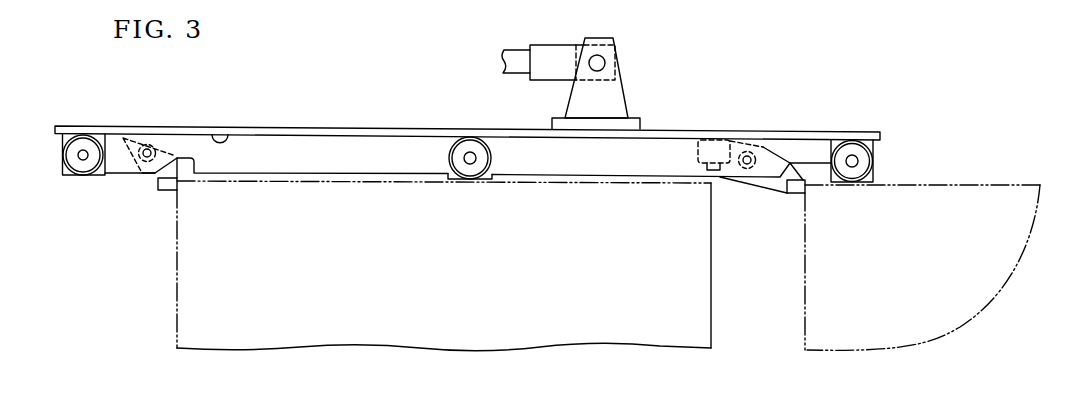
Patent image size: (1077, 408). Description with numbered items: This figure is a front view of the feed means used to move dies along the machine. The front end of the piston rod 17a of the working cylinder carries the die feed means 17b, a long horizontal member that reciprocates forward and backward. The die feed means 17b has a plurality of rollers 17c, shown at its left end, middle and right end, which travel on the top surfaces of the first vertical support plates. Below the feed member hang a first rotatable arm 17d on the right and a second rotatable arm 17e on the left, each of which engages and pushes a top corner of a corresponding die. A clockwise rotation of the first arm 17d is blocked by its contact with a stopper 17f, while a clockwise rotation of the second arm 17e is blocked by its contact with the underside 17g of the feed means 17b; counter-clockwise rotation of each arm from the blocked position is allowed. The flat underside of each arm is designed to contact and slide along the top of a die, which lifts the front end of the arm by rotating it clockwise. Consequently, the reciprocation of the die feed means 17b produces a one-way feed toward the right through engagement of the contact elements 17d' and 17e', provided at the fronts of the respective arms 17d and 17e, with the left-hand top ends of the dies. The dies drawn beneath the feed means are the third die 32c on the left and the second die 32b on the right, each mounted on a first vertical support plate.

The piston rod 17a is at (513, 60).
The die feed means 17b is at (367, 116).
The rollers 17c is at (82, 168).
The first rotatable arm 17d is at (753, 200).
The contact element 17d' is at (777, 224).
The second rotatable arm 17e is at (146, 178).
The contact element 17e' is at (147, 222).
The stopper 17f is at (721, 143).
The underside of the feed means 17g is at (228, 133).
The second die 32b is at (982, 275).
The third die 32c is at (184, 297).